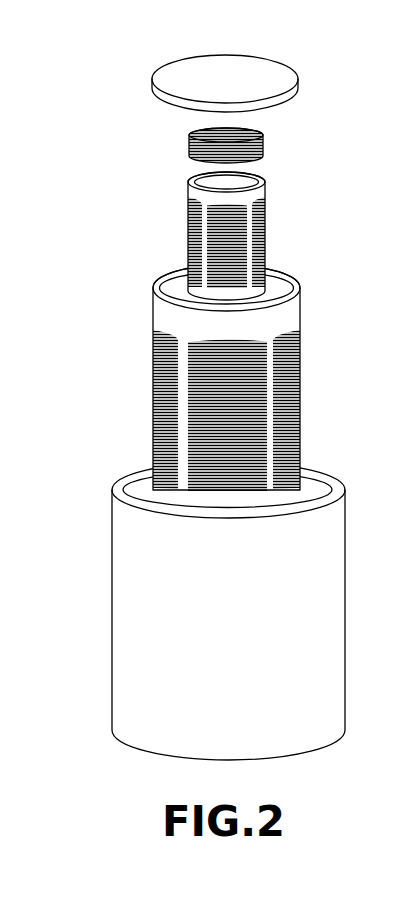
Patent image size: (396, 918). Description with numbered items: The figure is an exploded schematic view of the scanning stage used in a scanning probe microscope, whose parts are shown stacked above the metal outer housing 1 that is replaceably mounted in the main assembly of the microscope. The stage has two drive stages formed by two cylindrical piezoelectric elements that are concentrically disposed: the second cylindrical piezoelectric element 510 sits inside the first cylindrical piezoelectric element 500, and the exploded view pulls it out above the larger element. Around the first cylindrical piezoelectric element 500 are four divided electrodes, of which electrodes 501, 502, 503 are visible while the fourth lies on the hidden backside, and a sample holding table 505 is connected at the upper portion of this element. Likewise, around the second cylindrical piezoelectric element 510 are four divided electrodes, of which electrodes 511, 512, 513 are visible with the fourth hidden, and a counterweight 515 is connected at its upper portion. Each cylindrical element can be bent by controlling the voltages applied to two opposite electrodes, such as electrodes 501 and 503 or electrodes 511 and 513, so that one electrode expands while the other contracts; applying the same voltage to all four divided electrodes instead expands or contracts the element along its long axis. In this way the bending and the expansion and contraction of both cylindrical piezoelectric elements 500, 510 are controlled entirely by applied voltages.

The outer housing 1 is at (162, 560).
The first cylindrical piezoelectric element 500 is at (229, 378).
The electrode 501 is at (287, 375).
The electrode 502 is at (197, 367).
The electrode 503 is at (165, 388).
The sample holding table 505 is at (187, 82).
The second cylindrical piezoelectric element 510 is at (211, 229).
The electrode 511 is at (260, 223).
The electrode 512 is at (223, 257).
The electrode 513 is at (197, 228).
The counterweight 515 is at (203, 147).